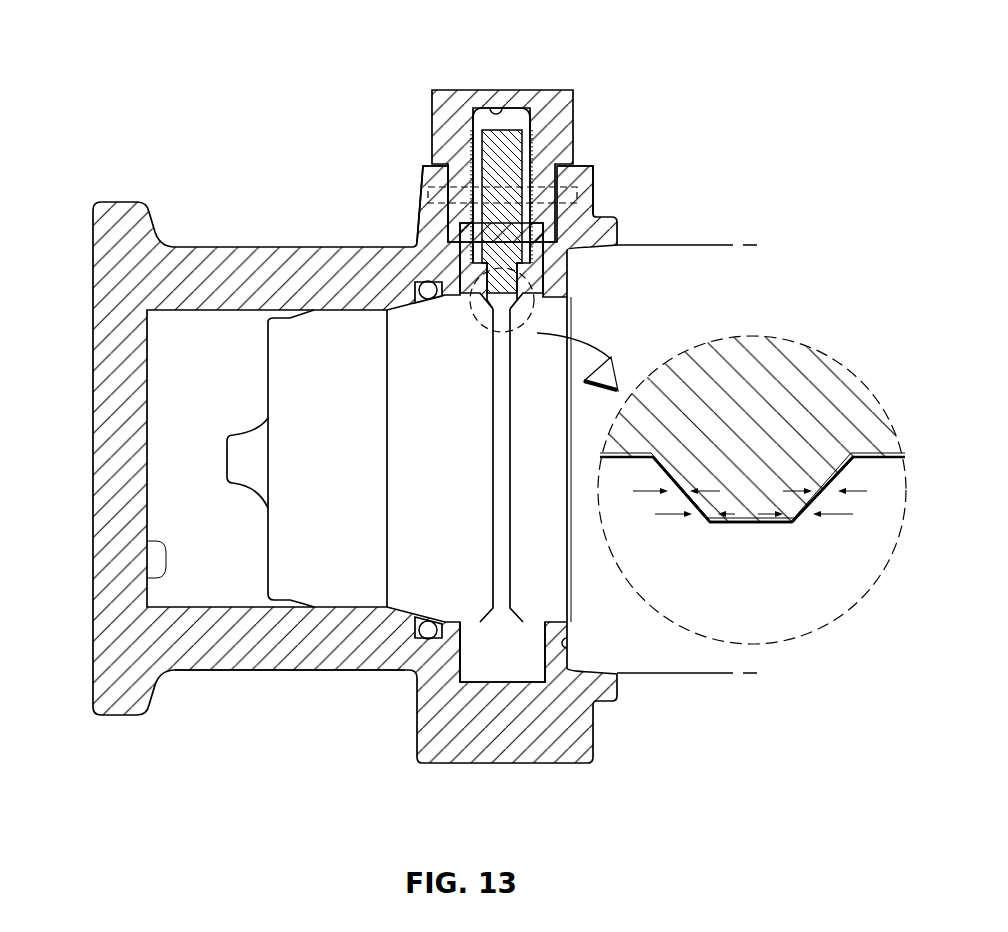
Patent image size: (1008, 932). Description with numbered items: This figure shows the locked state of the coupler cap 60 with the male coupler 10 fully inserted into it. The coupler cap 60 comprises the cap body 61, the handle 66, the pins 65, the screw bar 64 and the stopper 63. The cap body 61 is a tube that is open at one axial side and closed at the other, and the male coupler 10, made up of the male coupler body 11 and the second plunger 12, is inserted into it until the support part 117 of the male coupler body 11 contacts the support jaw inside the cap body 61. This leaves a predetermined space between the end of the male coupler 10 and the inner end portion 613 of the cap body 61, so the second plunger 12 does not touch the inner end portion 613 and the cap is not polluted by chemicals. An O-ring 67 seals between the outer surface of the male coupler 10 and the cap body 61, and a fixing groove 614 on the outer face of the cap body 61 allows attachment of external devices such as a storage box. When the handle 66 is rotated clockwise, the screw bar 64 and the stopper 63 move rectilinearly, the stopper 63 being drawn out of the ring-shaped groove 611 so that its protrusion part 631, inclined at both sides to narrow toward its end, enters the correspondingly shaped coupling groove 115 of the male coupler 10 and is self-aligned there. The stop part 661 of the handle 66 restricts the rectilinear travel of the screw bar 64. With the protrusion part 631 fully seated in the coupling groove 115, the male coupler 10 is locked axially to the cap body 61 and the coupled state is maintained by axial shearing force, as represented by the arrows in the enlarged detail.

The coupler cap 60 is at (172, 130).
The cap body 61 is at (535, 742).
The ring-shaped groove 611 is at (501, 672).
The inner end portion 613 is at (149, 560).
The fixing groove 614 is at (223, 672).
The pins 65 is at (566, 170).
The support part 117 is at (574, 640).
The handle 66 is at (449, 101).
The stop part 661 is at (502, 107).
The screw bar 64 is at (511, 163).
The stopper 63 is at (467, 276).
The protrusion part 631 is at (836, 476).
The O-ring 67 is at (411, 640).
The male coupler 10 is at (482, 491).
The male coupler body 11 is at (320, 583).
The coupling groove 115 is at (418, 713).
The second plunger 12 is at (238, 460).